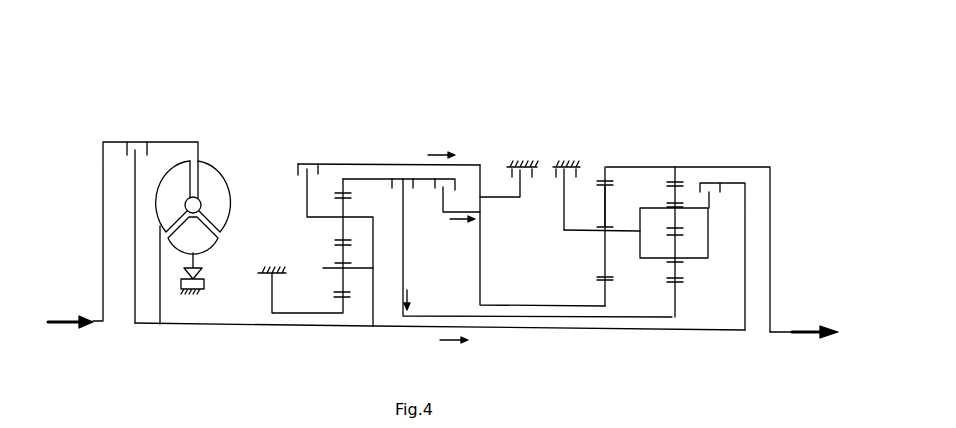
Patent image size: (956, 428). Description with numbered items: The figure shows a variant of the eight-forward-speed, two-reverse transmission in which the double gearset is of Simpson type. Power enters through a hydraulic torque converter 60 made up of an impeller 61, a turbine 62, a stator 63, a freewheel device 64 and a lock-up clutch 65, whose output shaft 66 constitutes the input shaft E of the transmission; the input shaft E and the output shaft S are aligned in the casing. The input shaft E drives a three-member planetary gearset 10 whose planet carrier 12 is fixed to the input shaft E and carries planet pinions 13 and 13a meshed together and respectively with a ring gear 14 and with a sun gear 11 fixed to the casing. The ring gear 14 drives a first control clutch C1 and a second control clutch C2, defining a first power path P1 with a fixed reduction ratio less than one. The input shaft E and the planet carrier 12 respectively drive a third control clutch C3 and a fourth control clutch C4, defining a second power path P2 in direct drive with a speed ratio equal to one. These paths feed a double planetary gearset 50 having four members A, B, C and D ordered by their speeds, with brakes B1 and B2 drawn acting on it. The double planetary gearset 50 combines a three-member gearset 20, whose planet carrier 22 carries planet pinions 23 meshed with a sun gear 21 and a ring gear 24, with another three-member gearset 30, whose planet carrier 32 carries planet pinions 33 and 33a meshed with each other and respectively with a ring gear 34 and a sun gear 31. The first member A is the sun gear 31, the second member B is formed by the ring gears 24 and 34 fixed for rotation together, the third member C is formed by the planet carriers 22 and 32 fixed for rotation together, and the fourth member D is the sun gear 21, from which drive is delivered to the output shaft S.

The planetary gearset 10 is at (353, 163).
The sun gear 11 is at (340, 313).
The planet carrier 12 is at (376, 258).
The planet pinion 13 is at (338, 210).
The planet pinion 13a is at (338, 266).
The ring gear 14 is at (336, 189).
The three-member planetary gearset 20 is at (605, 158).
The sun gear 21 is at (605, 297).
The planet carrier 22 is at (633, 234).
The planet pinions 23 is at (604, 202).
The ring gear 24 is at (603, 175).
The three-member gearset 30 is at (663, 158).
The sun gear 31 is at (678, 301).
The planet carrier 32 is at (710, 226).
The planet pinion 33 is at (668, 203).
The planet pinion 33a is at (684, 270).
The ring gear 34 is at (684, 167).
The double planetary gearset 50 is at (668, 76).
The hydraulic torque converter 60 is at (171, 141).
The impeller 61 is at (213, 172).
The turbine 62 is at (158, 200).
The stator 63 is at (207, 247).
The freewheel device 64 is at (201, 273).
The lock-up clutch 65 is at (131, 141).
The output shaft 66 is at (148, 324).
The first member A is at (633, 329).
The second member B is at (746, 167).
The brake B1 is at (566, 157).
The brake B2 is at (509, 167).
The third member C is at (562, 220).
The first control clutch C1 is at (395, 197).
The second control clutch C2 is at (450, 197).
The third control clutch C3 is at (722, 256).
The fourth control clutch C4 is at (299, 178).
The fourth member D is at (513, 306).
The input shaft E is at (257, 327).
The output shaft S is at (781, 334).
The first power path P1 is at (439, 264).
The second power path P2 is at (448, 249).